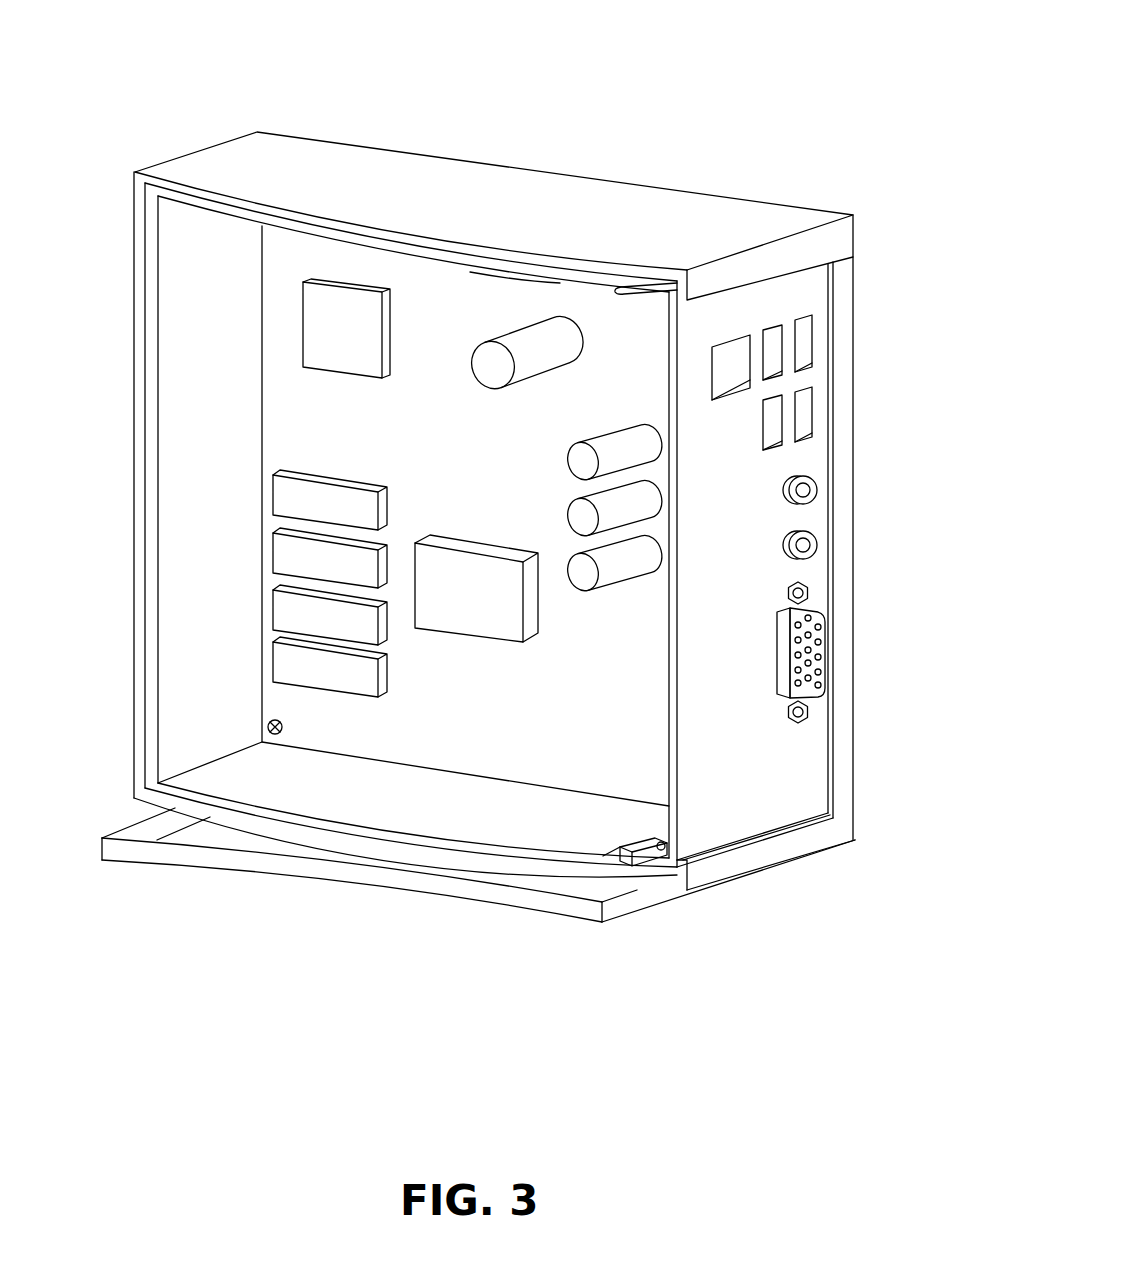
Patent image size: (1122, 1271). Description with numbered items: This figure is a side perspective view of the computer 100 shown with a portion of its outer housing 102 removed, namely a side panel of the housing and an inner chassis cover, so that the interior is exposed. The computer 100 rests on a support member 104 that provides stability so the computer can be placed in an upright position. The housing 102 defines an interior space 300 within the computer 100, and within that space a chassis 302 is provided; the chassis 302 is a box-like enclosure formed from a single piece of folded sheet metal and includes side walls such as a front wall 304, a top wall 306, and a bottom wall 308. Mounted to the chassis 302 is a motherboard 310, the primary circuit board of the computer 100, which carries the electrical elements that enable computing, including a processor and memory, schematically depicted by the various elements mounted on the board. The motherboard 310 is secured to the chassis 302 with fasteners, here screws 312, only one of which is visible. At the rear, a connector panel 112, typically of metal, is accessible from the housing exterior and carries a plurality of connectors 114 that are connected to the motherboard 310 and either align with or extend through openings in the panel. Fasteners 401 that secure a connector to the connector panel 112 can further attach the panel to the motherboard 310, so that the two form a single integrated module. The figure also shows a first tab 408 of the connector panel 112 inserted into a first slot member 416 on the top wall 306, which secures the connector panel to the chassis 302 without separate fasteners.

The computer 100 is at (843, 92).
The outer housing 102 is at (656, 200).
The support member 104 is at (178, 868).
The rear connector panel 112 is at (795, 808).
The connectors 114 is at (870, 317).
The interior space 300 is at (178, 491).
The chassis 302 is at (158, 650).
The front wall 304 is at (248, 370).
The top wall 306 is at (522, 280).
The bottom wall 308 is at (413, 783).
The motherboard 310 is at (490, 463).
The screws 312 is at (283, 730).
The fasteners 401 is at (785, 592).
The first tab 408 is at (665, 843).
The first slot member 416 is at (640, 843).